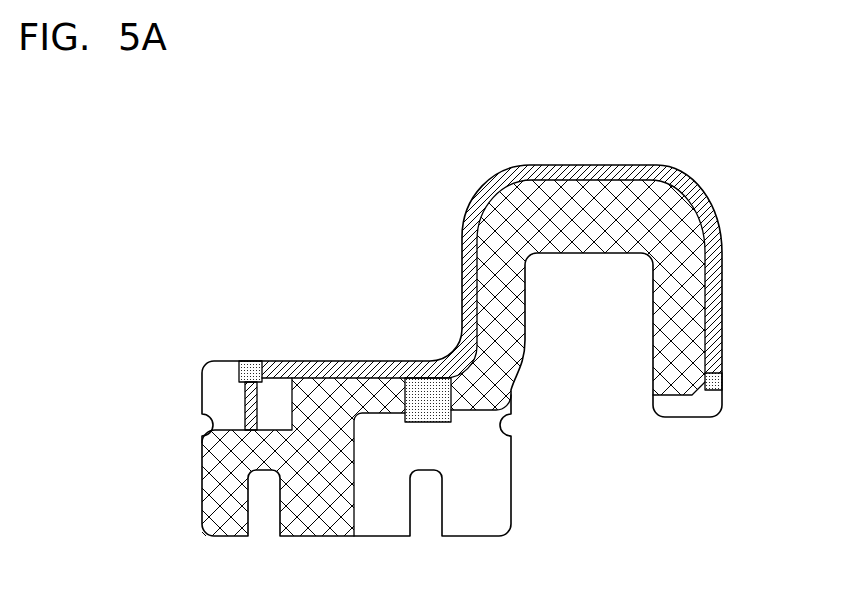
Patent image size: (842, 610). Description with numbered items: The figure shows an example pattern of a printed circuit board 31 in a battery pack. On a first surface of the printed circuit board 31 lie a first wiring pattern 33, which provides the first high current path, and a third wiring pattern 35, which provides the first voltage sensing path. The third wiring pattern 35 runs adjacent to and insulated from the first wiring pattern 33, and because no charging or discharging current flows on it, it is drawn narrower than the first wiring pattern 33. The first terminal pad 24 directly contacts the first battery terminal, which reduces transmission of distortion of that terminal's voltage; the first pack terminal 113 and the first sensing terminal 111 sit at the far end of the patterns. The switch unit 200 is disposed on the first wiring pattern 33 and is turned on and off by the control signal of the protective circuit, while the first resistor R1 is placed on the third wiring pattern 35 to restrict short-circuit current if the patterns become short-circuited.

The printed circuit board 31 is at (748, 190).
The first wiring pattern 33 is at (575, 260).
The third wiring pattern 35 is at (566, 166).
The first sensing terminal 111 is at (722, 382).
The first pack terminal 113 is at (657, 364).
The switch unit 200 is at (414, 390).
The first resistor R1 is at (251, 361).
The first terminal pad 24 is at (218, 520).